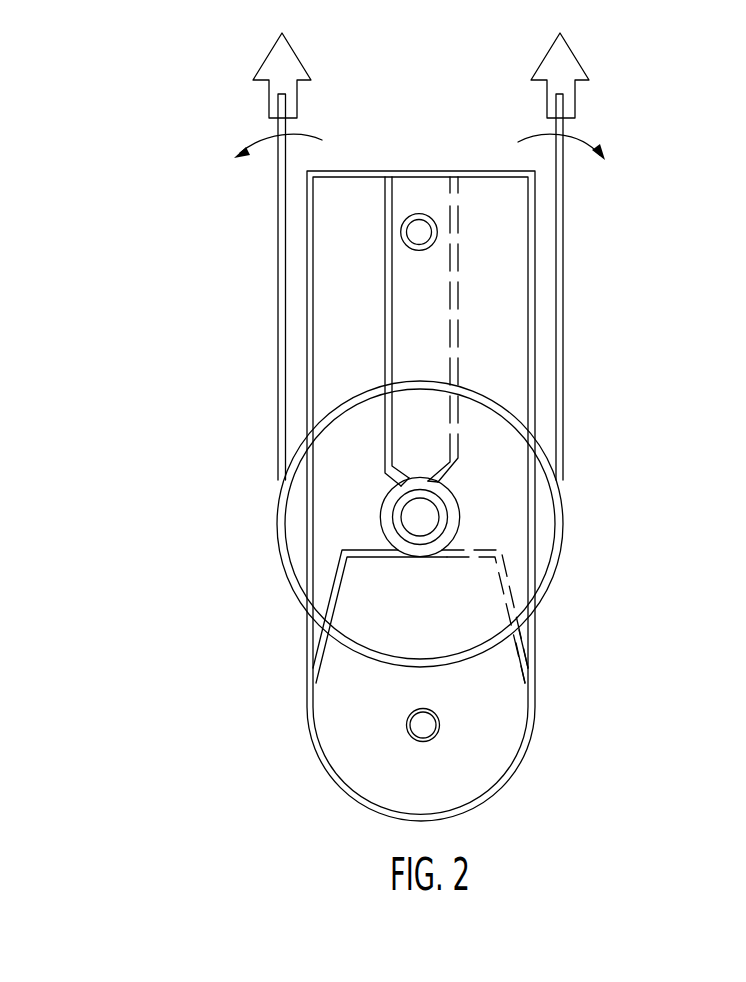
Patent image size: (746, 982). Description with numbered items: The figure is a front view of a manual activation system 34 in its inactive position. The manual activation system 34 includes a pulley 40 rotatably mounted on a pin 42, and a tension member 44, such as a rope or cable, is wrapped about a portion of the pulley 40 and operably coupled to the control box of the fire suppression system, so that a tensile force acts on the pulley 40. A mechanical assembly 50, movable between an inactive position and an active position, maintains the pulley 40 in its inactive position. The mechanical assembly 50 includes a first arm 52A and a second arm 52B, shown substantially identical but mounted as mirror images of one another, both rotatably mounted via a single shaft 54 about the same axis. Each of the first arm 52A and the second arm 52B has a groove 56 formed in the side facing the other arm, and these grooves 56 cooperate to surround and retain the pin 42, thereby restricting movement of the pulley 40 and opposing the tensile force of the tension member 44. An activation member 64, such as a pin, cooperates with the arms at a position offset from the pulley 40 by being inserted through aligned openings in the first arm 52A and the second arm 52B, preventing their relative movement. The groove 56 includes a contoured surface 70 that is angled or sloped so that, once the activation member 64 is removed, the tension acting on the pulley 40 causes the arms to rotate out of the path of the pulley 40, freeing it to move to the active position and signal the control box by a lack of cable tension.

The manual activation system 34 is at (347, 426).
The pulley 40 is at (545, 527).
The pin 42 is at (402, 520).
The tension member 44 is at (277, 238).
The mechanical assembly 50 is at (530, 283).
The first arm 52A is at (347, 342).
The second arm 52B is at (508, 357).
The shaft 54 is at (423, 724).
The groove 56 is at (389, 495).
The activation member 64 is at (419, 232).
The contoured surface 70 is at (401, 466).